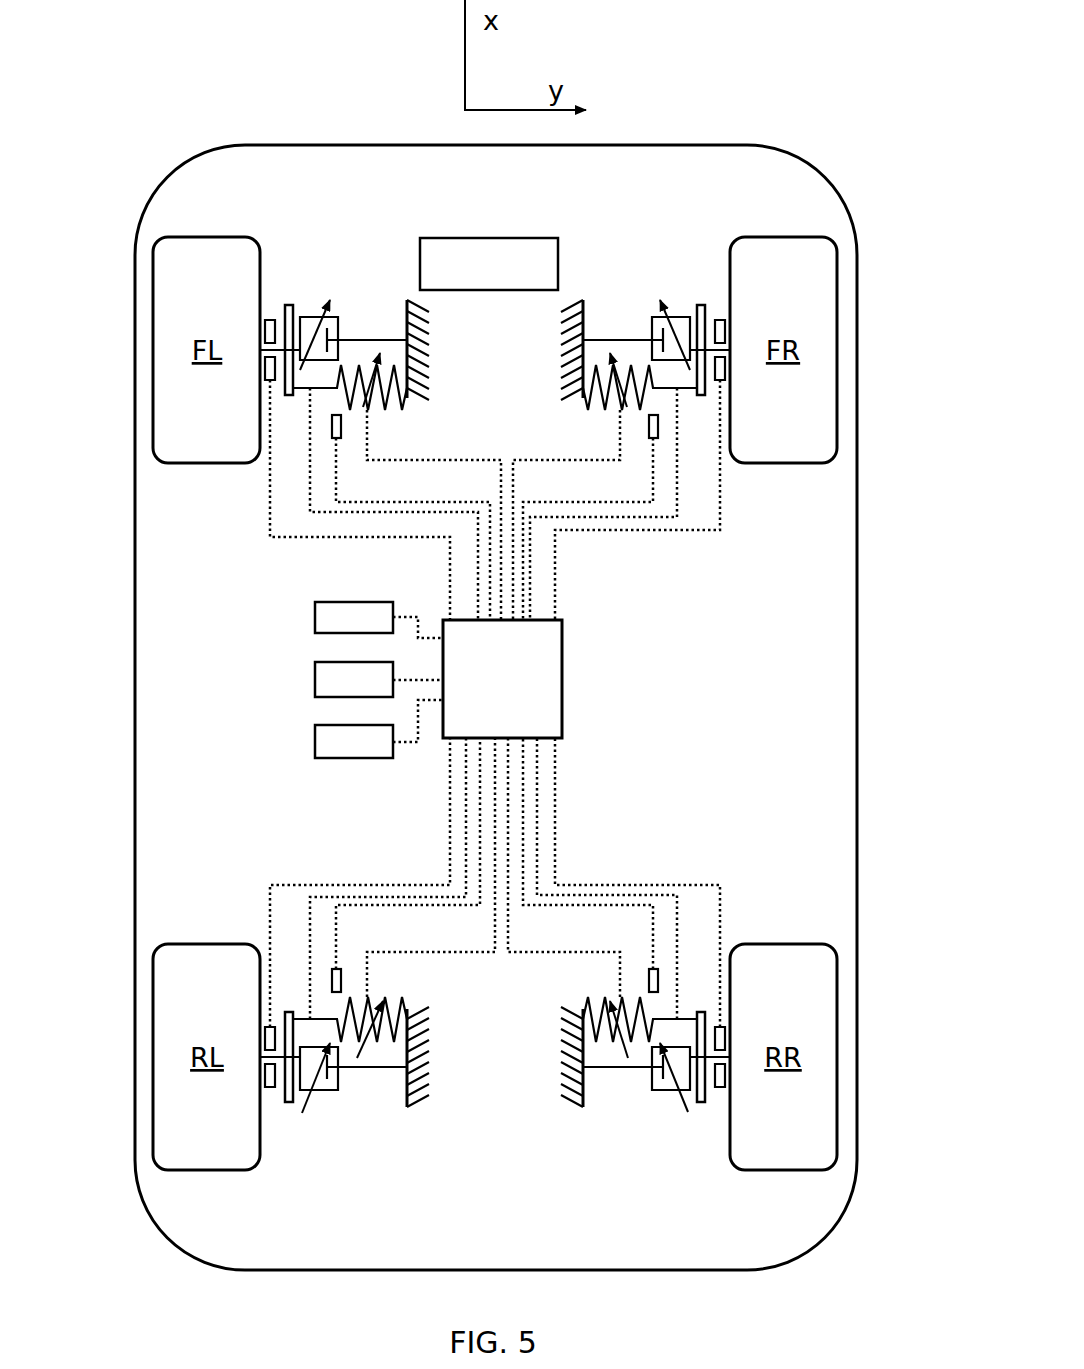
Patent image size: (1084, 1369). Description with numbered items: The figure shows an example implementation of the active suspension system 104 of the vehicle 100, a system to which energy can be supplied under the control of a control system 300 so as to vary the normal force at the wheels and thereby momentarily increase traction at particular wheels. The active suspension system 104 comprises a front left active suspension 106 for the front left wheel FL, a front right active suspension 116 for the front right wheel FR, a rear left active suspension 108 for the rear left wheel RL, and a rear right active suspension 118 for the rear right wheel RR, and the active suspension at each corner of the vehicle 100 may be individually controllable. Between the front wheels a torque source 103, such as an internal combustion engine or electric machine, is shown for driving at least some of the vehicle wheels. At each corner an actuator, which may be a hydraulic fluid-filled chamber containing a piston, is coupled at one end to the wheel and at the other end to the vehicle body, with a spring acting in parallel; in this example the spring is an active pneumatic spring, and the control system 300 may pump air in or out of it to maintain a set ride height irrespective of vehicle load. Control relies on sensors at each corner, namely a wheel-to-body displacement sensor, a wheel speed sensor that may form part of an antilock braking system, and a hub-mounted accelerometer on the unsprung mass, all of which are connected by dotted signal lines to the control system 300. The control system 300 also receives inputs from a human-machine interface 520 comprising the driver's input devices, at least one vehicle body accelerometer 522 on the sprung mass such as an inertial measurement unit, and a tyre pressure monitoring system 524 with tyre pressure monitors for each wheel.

The vehicle 100 is at (793, 160).
The torque source 103 is at (488, 238).
The active suspension system 104 is at (285, 106).
The front left active suspension 106 is at (335, 216).
The rear left active suspension 108 is at (260, 910).
The front right active suspension 116 is at (650, 215).
The rear right active suspension 118 is at (734, 911).
The control system 300 is at (560, 620).
The human-machine interface 520 is at (379, 620).
The vehicle body accelerometer 522 is at (379, 679).
The tyre pressure monitoring system 524 is at (379, 729).